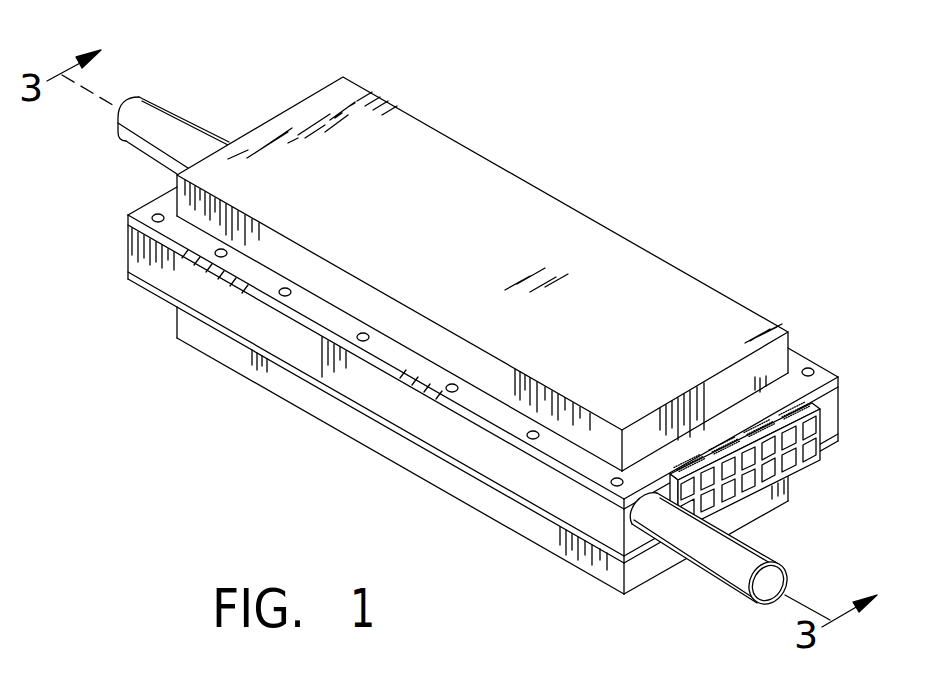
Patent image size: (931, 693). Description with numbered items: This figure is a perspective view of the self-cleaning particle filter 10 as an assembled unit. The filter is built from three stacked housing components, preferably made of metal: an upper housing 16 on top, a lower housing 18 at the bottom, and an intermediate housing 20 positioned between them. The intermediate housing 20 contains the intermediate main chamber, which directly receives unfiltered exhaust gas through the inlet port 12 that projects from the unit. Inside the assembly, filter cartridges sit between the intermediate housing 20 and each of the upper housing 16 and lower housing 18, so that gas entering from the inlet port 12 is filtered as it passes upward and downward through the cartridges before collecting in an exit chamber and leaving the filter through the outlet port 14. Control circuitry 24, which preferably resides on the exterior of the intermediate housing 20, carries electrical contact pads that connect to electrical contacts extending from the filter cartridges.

The self-cleaning particle filter 10 is at (541, 111).
The inlet port 12 is at (735, 562).
The outlet port 14 is at (173, 124).
The upper housing 16 is at (633, 262).
The lower housing 18 is at (540, 522).
The intermediate housing 20 is at (253, 322).
The control circuitry 24 is at (833, 423).